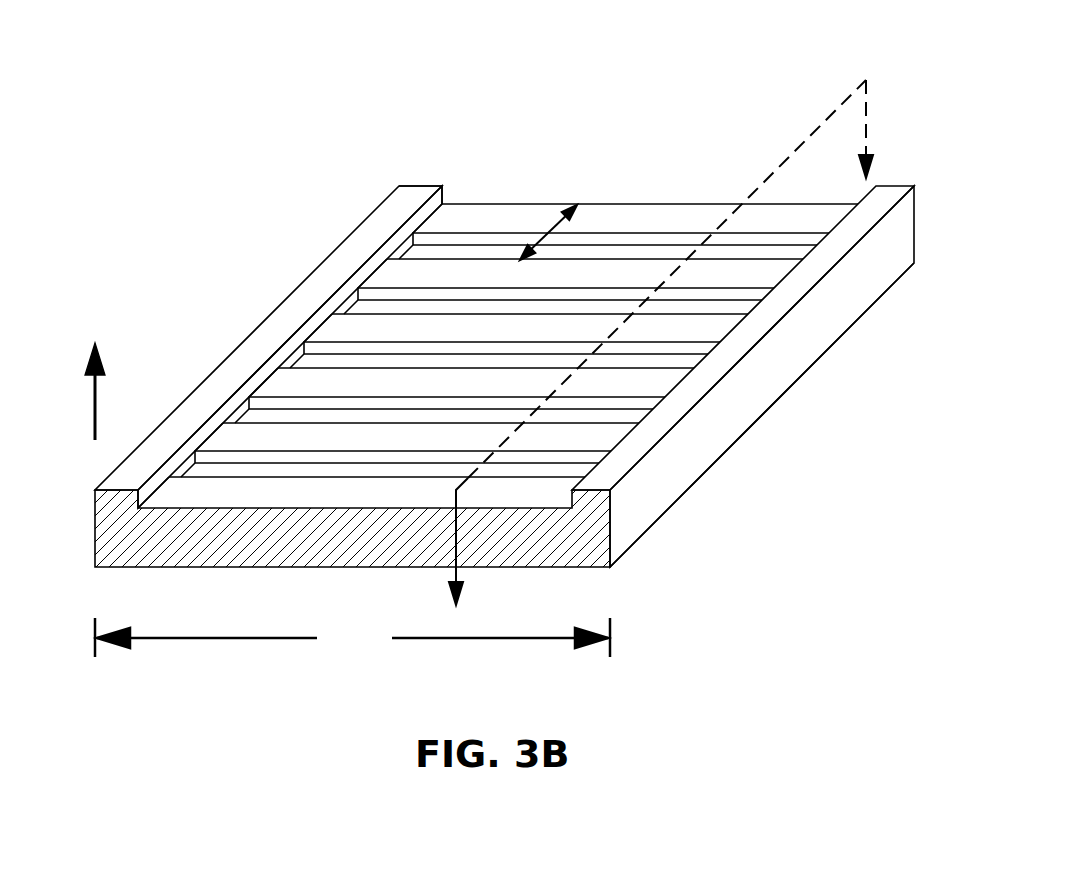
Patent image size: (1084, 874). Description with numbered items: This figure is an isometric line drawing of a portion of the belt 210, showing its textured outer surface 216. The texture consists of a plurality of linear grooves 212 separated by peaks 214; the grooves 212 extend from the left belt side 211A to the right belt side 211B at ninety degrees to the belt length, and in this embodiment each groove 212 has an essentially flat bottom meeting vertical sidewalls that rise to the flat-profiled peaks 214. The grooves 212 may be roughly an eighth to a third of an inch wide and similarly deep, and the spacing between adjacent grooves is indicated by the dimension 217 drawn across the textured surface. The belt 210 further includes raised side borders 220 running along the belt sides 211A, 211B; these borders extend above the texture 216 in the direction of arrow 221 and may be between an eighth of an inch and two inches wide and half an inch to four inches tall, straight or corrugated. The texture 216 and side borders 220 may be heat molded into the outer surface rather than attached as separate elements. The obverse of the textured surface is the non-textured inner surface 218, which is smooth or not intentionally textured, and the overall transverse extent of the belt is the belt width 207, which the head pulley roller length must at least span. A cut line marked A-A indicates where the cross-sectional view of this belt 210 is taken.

The belt width 207 is at (352, 637).
The belt 210 is at (709, 83).
The left belt side 211A is at (303, 285).
The right belt side 211B is at (788, 387).
The grooves 212 is at (375, 417).
The peaks 214 is at (446, 278).
The textured outer surface 216 is at (486, 180).
The channel pitch 217 is at (555, 230).
The non-textured inner surface 218 is at (665, 510).
The raised side borders 220 is at (415, 195).
The arrow 221 is at (120, 391).